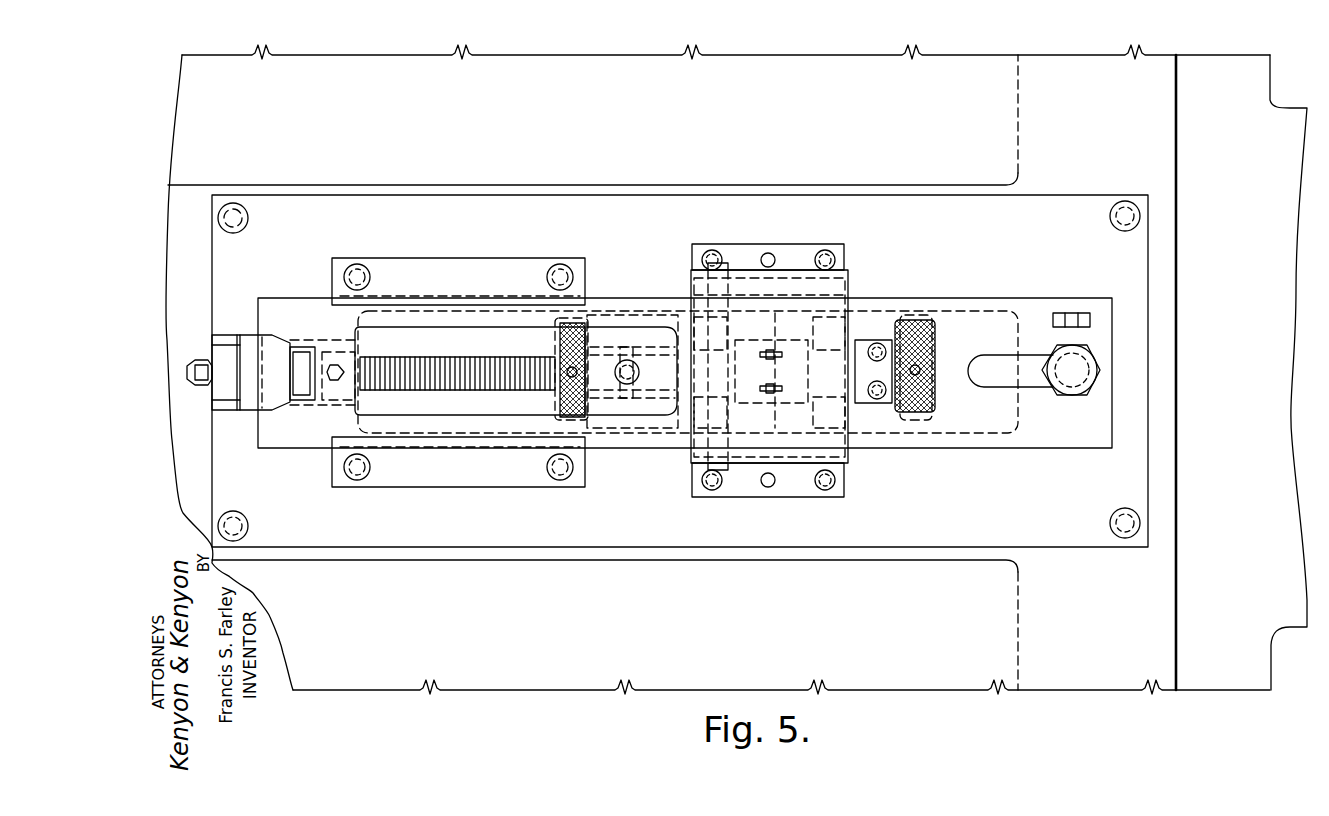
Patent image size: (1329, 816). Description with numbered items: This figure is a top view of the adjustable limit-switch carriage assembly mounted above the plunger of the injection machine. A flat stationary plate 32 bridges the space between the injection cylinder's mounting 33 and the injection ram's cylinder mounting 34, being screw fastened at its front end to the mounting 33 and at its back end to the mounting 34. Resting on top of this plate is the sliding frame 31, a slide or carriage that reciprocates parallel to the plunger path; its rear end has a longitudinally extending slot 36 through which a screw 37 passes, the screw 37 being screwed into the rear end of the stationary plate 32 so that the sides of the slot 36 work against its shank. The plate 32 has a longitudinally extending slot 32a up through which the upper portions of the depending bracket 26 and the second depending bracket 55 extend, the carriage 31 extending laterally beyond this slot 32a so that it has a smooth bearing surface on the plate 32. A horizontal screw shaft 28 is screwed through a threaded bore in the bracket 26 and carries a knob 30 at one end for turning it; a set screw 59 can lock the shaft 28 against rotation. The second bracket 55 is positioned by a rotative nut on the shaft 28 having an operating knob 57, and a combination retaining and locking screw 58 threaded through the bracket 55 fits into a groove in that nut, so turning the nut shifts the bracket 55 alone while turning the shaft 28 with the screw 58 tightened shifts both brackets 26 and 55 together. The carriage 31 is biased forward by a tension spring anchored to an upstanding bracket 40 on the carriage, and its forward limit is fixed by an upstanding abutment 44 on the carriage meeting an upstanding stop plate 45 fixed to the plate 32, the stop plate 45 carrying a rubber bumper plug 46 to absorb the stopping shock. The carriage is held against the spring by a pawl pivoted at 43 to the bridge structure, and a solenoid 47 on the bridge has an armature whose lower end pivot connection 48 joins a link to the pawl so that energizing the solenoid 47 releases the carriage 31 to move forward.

The depending bracket 26 is at (868, 312).
The screw shaft 28 is at (466, 364).
The knob 30 is at (936, 351).
The sliding frame 31 is at (1043, 448).
The flat plate 32 is at (1062, 548).
The longitudinally extending slot 32a is at (360, 410).
The injection cylinder's mounting 33 is at (183, 440).
The injection ram's cylinder mounting 34 is at (1178, 249).
The slot 36 is at (1001, 388).
The screw 37 is at (1095, 367).
The bracket 40 is at (1080, 313).
The pivot 43 is at (722, 262).
The upstanding abutment 44 is at (305, 345).
The upstanding stop plate 45 is at (225, 352).
The rubber bumper plug 46 is at (252, 415).
The solenoid 47 is at (848, 462).
The lower end pivot connection 48 is at (764, 384).
The second depending bracket 55 is at (624, 312).
The operating knob 57 is at (560, 400).
The combination retaining and locking screw 58 is at (640, 372).
The set screw 59 is at (880, 404).